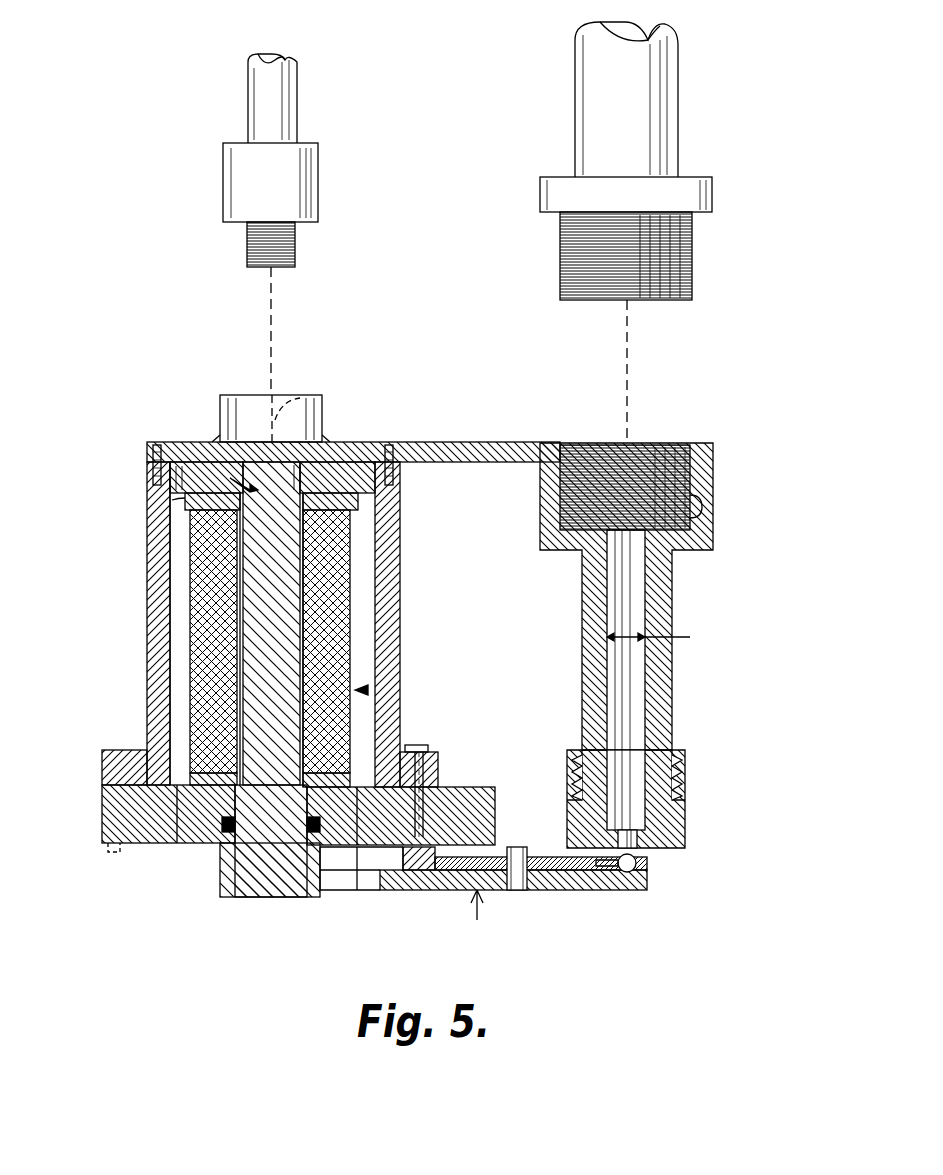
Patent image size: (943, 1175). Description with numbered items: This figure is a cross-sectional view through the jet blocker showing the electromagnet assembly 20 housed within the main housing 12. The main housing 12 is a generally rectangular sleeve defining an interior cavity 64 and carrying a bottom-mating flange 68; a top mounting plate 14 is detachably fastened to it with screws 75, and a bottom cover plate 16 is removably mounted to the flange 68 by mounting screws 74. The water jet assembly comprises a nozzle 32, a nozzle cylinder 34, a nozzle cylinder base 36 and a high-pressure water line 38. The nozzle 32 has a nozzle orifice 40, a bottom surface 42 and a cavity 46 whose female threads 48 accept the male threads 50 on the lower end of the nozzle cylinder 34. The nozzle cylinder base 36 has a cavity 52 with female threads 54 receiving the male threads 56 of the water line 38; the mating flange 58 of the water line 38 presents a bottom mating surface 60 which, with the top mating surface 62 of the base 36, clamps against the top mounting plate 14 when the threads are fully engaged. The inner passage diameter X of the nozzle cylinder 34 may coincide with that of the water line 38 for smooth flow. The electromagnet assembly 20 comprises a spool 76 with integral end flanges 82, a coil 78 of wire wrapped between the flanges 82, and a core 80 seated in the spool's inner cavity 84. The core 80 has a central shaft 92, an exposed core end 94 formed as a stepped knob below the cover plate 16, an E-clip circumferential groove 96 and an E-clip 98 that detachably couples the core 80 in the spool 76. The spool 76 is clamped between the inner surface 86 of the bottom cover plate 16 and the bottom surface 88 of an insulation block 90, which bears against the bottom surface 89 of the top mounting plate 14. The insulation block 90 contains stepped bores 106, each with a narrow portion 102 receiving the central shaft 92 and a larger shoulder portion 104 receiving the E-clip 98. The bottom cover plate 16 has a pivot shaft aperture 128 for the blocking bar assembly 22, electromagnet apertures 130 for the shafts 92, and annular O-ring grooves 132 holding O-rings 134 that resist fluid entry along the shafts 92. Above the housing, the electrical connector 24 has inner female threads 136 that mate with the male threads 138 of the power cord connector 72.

The main housing 12 is at (160, 598).
The top mounting plate 14 is at (458, 448).
The bottom cover plate 16 is at (102, 820).
The electromagnet assembly 20 is at (360, 690).
The blocking bar assembly 22 is at (483, 899).
The electrical connector 24 is at (322, 418).
The nozzle 32 is at (685, 755).
The nozzle cylinder 34 is at (672, 690).
The nozzle cylinder base 36 is at (540, 545).
The high-pressure water line 38 is at (678, 100).
The nozzle orifice 40 is at (592, 835).
The bottom surface 42 is at (636, 865).
The cavity 46 is at (672, 825).
The female threads 48 is at (685, 790).
The male threads 50 is at (570, 770).
The cavity 52 is at (672, 580).
The female threads 54 is at (690, 510).
The male threads 56 is at (692, 265).
The mating flange 58 is at (712, 195).
The bottom mating surface 60 is at (560, 222).
The top mating surface 62 is at (690, 455).
The interior cavity 64 is at (175, 665).
The bottom-mating flange 68 is at (102, 765).
The power cord connector 72 is at (223, 175).
The mounting screws 74 is at (118, 850).
The screws 75 is at (157, 450).
The spool 76 is at (215, 700).
The coil 78 is at (240, 570).
The core 80 is at (260, 590).
The integral end flanges 82 is at (290, 520).
The inner cylindrically shaped cavity 84 is at (305, 600).
The inner surface 86 is at (355, 775).
The bottom surface 88 is at (215, 540).
The bottom surface 89 is at (185, 500).
The insulation block 90 is at (330, 500).
The central shaft 92 is at (310, 640).
The exposed core end 94 is at (270, 897).
The E-clip circumferential groove 96 is at (345, 560).
The E-clip 98 is at (310, 470).
The narrow portion 102 is at (200, 468).
The shoulder portion 104 is at (178, 480).
The stepped bores 106 is at (250, 480).
The pivot shaft aperture 128 is at (425, 790).
The electromagnet apertures 130 is at (370, 800).
The annular O-ring grooves 132 is at (225, 832).
The O-rings 134 is at (225, 825).
The inner female threads 136 is at (290, 398).
The male threads 138 is at (295, 245).
The bore diameter X is at (660, 639).